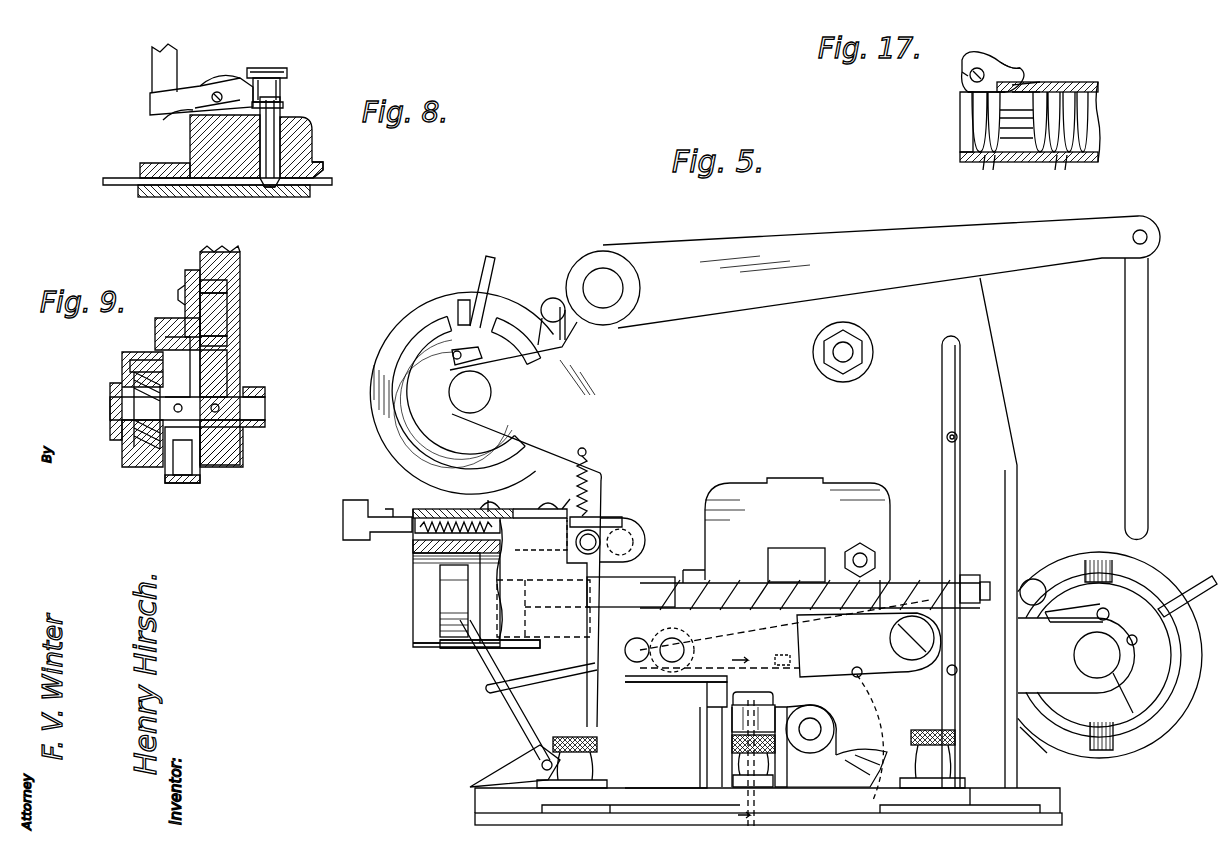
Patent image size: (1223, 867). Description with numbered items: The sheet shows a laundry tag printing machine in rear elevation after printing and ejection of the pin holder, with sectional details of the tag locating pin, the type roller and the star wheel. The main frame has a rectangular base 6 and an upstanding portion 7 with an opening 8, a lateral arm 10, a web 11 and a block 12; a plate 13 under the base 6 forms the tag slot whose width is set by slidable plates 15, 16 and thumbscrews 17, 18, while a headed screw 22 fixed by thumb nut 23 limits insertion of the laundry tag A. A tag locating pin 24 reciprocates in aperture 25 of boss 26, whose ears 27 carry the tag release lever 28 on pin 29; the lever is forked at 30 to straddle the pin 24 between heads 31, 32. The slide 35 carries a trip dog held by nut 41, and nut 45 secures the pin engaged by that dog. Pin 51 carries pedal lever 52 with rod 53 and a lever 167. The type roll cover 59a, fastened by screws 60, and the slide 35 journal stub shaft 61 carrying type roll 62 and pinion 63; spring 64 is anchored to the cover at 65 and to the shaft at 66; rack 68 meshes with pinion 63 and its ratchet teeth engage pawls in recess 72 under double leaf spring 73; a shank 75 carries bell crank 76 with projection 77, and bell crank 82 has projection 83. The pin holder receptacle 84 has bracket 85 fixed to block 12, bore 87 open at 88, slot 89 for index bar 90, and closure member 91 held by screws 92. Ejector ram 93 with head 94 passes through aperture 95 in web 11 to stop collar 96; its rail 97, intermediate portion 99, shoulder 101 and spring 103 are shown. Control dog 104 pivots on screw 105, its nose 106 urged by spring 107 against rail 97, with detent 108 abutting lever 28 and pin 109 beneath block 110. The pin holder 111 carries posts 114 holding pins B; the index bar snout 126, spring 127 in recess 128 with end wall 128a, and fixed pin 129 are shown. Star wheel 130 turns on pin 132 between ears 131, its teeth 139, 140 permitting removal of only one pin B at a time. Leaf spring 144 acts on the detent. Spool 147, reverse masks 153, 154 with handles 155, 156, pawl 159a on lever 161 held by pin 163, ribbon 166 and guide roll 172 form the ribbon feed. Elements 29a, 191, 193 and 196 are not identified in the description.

In FIG. 8, the base 6 is at (150, 164).
In FIG. 5, the base 6 is at (1062, 790).
In FIG. 5, the upstanding portion 7 is at (1000, 468).
In FIG. 5, the opening 8 is at (888, 510).
In FIG. 5, the lateral arm 10 is at (525, 401).
In FIG. 5, the web 11 is at (940, 412).
In FIG. 5, the block 12 is at (618, 716).
In FIG. 8, the plate 13 is at (180, 197).
In FIG. 5, the plate 13 is at (1063, 814).
In FIG. 5, the slidable plate 15 is at (610, 800).
In FIG. 5, the slidable plate 16 is at (955, 800).
In FIG. 5, the thumbscrew 17 is at (600, 745).
In FIG. 5, the thumbscrew 18 is at (958, 742).
In FIG. 5, the headed screw 22 is at (760, 790).
In FIG. 5, the thumb nut 23 is at (770, 762).
In FIG. 8, the tag locating pin 24 is at (283, 128).
In FIG. 8, the aperture 25 is at (315, 168).
In FIG. 8, the boss 26 is at (300, 143).
In FIG. 5, the boss 26 is at (733, 772).
In FIG. 8, the ears 27 is at (208, 82).
In FIG. 8, the tag release lever 28 is at (152, 104).
In FIG. 8, the pin 29 is at (220, 92).
In FIG. 8, the point 29a is at (270, 195).
In FIG. 8, the fork 30 is at (284, 90).
In FIG. 5, the fork 30 is at (732, 716).
In FIG. 8, the head 31 is at (272, 67).
In FIG. 5, the head 31 is at (775, 700).
In FIG. 8, the head 32 is at (286, 105).
In FIG. 9, the slide 35 is at (244, 268).
In FIG. 5, the slide 35 is at (797, 529).
In FIG. 5, the nut 41 is at (858, 550).
In FIG. 5, the nut 45 is at (858, 348).
In FIG. 5, the pin 51 is at (607, 278).
In FIG. 5, the pedal lever 52 is at (770, 242).
In FIG. 5, the rod 53 is at (1125, 342).
In FIG. 9, the type roll cover 59a is at (185, 265).
In FIG. 9, the screws 60 is at (184, 292).
In FIG. 9, the stub shaft 61 is at (267, 406).
In FIG. 5, the stub shaft 61 is at (822, 732).
In FIG. 9, the type roll 62 is at (203, 478).
In FIG. 5, the type roll 62 is at (866, 780).
In FIG. 9, the pinion 63 is at (235, 430).
In FIG. 9, the spring 64 is at (150, 445).
In FIG. 9, the spring end attachment 65 is at (120, 378).
In FIG. 9, the spring end attachment 66 is at (196, 408).
In FIG. 9, the rack 68 is at (245, 362).
In FIG. 9, the recess 72 is at (213, 314).
In FIG. 9, the double leaf spring 73 is at (230, 304).
In FIG. 5, the shank 75 is at (684, 642).
In FIG. 5, the bell crank 76 is at (672, 639).
In FIG. 5, the projection 77 is at (645, 645).
In FIG. 5, the bell crank 82 is at (630, 538).
In FIG. 5, the projection 83 is at (583, 552).
In FIG. 5, the pin holder receptacle 84 is at (410, 627).
In FIG. 5, the bracket 85 is at (585, 712).
In FIG. 5, the bore 87 is at (417, 594).
In FIG. 5, the bottom opening 88 is at (420, 647).
In FIG. 5, the slot 89 is at (541, 536).
In FIG. 5, the index bar 90 is at (618, 517).
In FIG. 5, the closure member 91 is at (556, 497).
In FIG. 5, the screws 92 is at (539, 497).
In FIG. 5, the ejector ram 93 is at (535, 580).
In FIG. 5, the head 94 is at (454, 601).
In FIG. 5, the aperture 95 is at (965, 575).
In FIG. 5, the stop collar 96 is at (983, 582).
In FIG. 5, the rail 97 is at (458, 648).
In FIG. 5, the intermediate portion 99 is at (810, 587).
In FIG. 5, the shoulder 101 is at (648, 580).
In FIG. 5, the spring 103 is at (888, 603).
In FIG. 5, the control dog 104 is at (672, 672).
In FIG. 5, the screw 105 is at (895, 655).
In FIG. 5, the nose portion 106 is at (495, 693).
In FIG. 5, the spring 107 is at (869, 645).
In FIG. 8, the detent 108 is at (153, 64).
In FIG. 5, the detent 108 is at (727, 696).
In FIG. 5, the pin 109 is at (789, 664).
In FIG. 5, the block 110 is at (768, 563).
In FIG. 17, the pin holder 111 is at (1088, 82).
In FIG. 17, the posts 114 is at (1030, 155).
In FIG. 5, the snout 126 is at (350, 498).
In FIG. 5, the spring 127 is at (425, 505).
In FIG. 5, the recess 128 is at (420, 545).
In FIG. 5, the end wall 128a is at (506, 528).
In FIG. 5, the fixed pin 129 is at (492, 504).
In FIG. 17, the four-point star wheel 130 is at (983, 62).
In FIG. 17, the ears 131 is at (1005, 72).
In FIG. 17, the pin 132 is at (963, 74).
In FIG. 17, the tooth 139 is at (1000, 86).
In FIG. 17, the tooth 140 is at (970, 90).
In FIG. 8, the leaf spring 144 is at (172, 122).
In FIG. 5, the spool 147 is at (414, 318).
In FIG. 5, the reverse mask 153 is at (1103, 655).
In FIG. 5, the reverse mask 154 is at (460, 320).
In FIG. 5, the operating handle 155 is at (1198, 588).
In FIG. 5, the operating handle 156 is at (493, 256).
In FIG. 5, the spring-tensioned pawl 159a is at (1035, 580).
In FIG. 5, the lever 161 is at (820, 620).
In FIG. 5, the pin 163 is at (857, 680).
In FIG. 5, the ribbon 166 is at (518, 735).
In FIG. 5, the lever 167 is at (556, 296).
In FIG. 5, the guide roll 172 is at (530, 770).
In FIG. 5, the stop 191 is at (390, 508).
In FIG. 5, the spring 193 is at (590, 470).
In FIG. 5, the pawl 196 is at (1092, 556).
In FIG. 8, the laundry tag A is at (112, 186).
In FIG. 17, the pins B is at (1022, 174).
In FIG. 5, the pins B is at (741, 736).